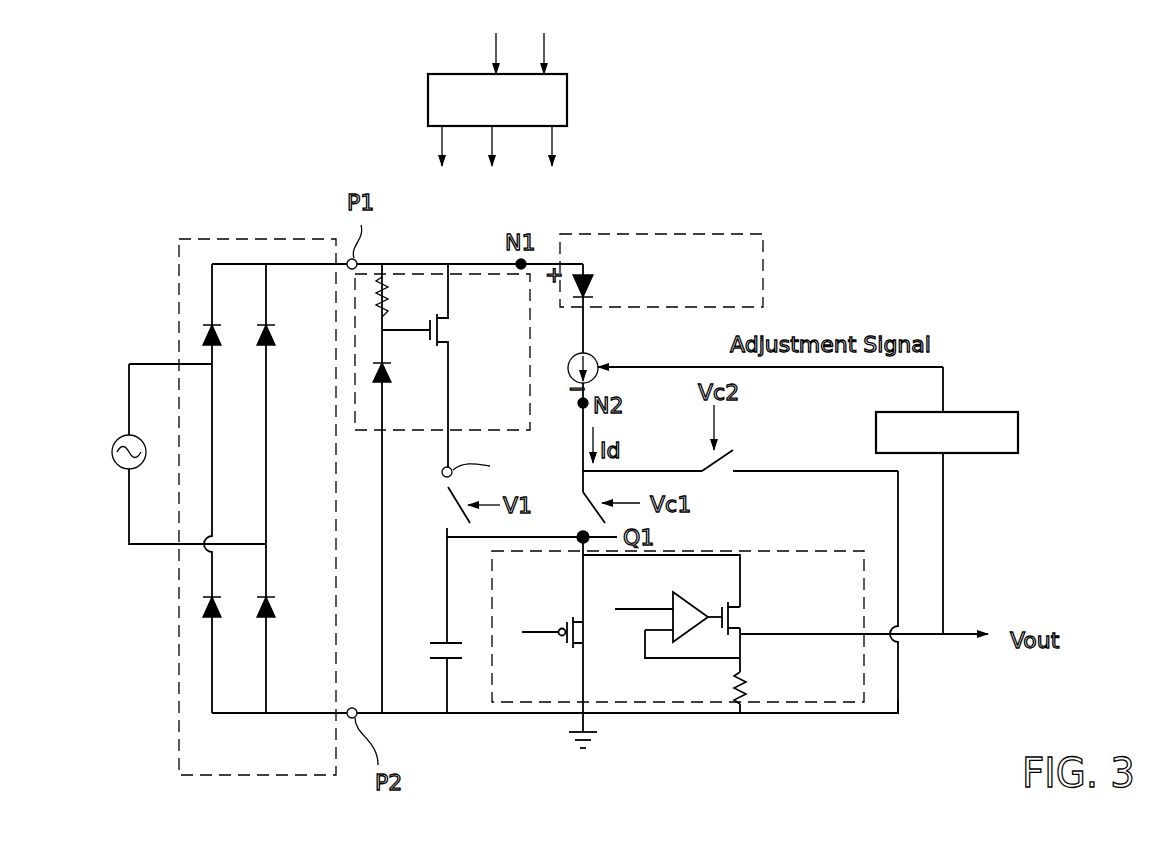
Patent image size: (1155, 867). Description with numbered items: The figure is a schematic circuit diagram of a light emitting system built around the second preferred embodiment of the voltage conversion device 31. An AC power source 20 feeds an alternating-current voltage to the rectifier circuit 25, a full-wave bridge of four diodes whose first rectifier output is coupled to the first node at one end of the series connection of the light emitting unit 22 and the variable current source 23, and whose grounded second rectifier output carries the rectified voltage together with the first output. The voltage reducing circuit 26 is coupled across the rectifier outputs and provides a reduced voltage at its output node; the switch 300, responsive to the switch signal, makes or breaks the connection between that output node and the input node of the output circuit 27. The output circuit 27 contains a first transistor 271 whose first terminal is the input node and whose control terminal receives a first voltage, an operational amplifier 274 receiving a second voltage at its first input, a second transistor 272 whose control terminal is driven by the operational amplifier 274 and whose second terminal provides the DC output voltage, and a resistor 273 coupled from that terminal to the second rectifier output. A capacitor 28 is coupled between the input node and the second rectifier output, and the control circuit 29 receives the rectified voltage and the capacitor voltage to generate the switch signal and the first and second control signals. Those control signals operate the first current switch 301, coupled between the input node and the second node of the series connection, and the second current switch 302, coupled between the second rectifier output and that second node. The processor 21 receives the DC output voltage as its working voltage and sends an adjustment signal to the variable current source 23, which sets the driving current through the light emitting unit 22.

The AC power source 20 is at (116, 440).
The processor 21 is at (982, 412).
The light emitting unit 22 is at (684, 234).
The variable current source 23 is at (597, 358).
The rectifier circuit 25 is at (258, 775).
The voltage reducing circuit 26 is at (421, 272).
The output circuit 27 is at (812, 702).
The capacitor 28 is at (440, 660).
The control circuit 29 is at (567, 97).
The voltage conversion device 31 is at (880, 748).
The first transistor 271 is at (556, 643).
The second transistor 272 is at (748, 622).
The resistor 273 is at (730, 684).
The operational amplifier 274 is at (680, 600).
The switch 300 is at (441, 500).
The first current switch 301 is at (575, 500).
The second current switch 302 is at (722, 480).